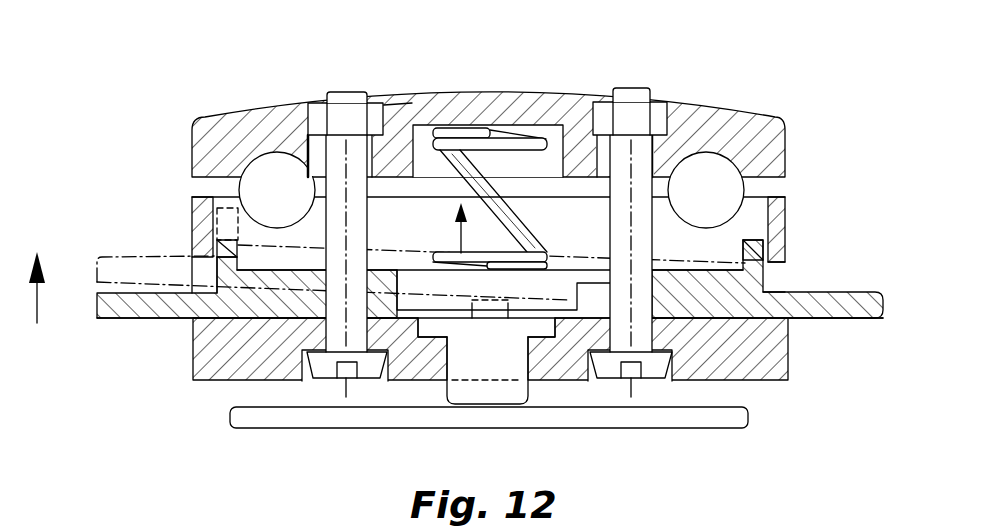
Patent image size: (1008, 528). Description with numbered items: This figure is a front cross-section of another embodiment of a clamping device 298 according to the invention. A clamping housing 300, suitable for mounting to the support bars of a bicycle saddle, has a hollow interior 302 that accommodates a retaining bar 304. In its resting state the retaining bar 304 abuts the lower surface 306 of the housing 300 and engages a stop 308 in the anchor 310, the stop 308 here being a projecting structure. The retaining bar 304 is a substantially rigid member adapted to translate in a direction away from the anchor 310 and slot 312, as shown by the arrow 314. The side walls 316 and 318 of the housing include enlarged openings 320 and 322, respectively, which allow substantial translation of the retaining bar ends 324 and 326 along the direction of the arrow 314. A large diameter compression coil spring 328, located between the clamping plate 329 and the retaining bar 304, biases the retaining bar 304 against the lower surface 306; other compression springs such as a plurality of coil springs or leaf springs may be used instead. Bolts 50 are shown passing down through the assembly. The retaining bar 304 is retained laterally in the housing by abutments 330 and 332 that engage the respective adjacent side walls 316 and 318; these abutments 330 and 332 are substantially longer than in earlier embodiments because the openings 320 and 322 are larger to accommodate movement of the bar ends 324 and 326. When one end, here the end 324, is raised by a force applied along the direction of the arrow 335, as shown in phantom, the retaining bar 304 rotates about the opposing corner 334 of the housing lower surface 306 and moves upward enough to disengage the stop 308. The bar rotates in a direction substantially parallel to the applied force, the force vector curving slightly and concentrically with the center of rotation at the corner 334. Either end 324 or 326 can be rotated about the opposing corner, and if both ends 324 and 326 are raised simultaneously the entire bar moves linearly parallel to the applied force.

The clamping device 298 is at (722, 72).
The bolt 50 is at (336, 180).
The hollow interior 302 is at (708, 148).
The clamping plate 329 is at (395, 103).
The arrow 314 is at (458, 232).
The compression coil spring 328 is at (512, 217).
The side wall 318 is at (787, 195).
The side wall 316 is at (197, 217).
The abutment 330 is at (215, 255).
The abutment 332 is at (757, 257).
The enlarged opening 320 is at (176, 266).
The enlarged opening 322 is at (795, 266).
The retaining bar end 326 is at (872, 293).
The retaining bar end 324 is at (128, 313).
The corner 334 is at (797, 318).
The clamping housing 300 is at (776, 386).
The retaining bar 304 is at (670, 312).
The lower surface 306 is at (396, 339).
The stop 308 is at (488, 305).
The anchor 310 is at (497, 372).
The slot 312 is at (554, 362).
The arrow 335 is at (40, 303).